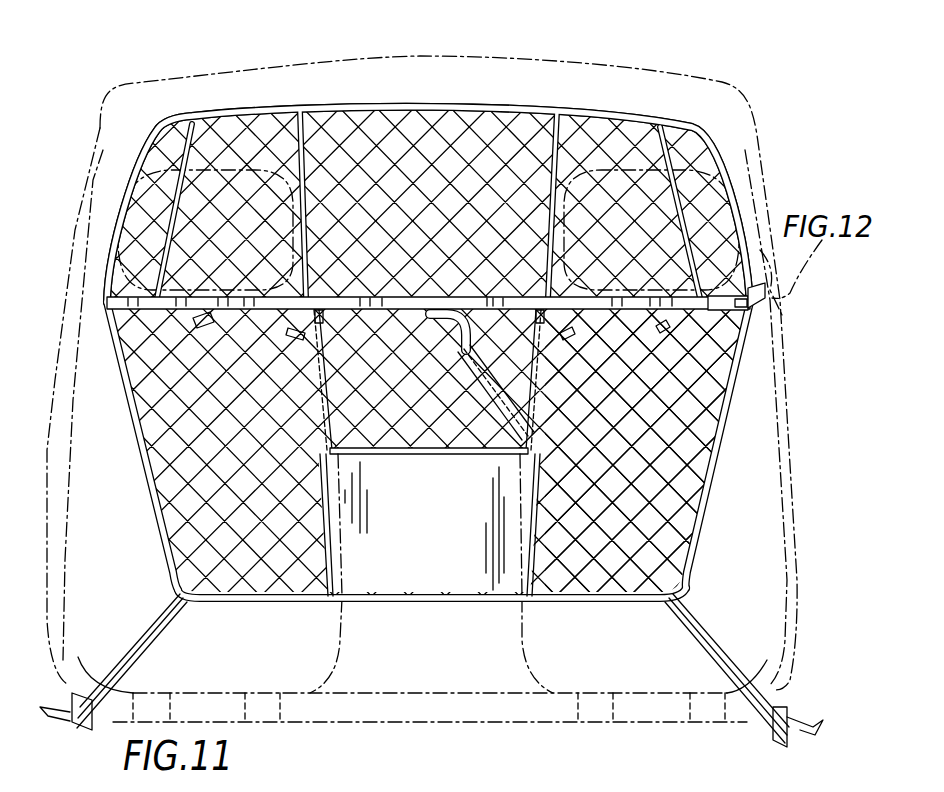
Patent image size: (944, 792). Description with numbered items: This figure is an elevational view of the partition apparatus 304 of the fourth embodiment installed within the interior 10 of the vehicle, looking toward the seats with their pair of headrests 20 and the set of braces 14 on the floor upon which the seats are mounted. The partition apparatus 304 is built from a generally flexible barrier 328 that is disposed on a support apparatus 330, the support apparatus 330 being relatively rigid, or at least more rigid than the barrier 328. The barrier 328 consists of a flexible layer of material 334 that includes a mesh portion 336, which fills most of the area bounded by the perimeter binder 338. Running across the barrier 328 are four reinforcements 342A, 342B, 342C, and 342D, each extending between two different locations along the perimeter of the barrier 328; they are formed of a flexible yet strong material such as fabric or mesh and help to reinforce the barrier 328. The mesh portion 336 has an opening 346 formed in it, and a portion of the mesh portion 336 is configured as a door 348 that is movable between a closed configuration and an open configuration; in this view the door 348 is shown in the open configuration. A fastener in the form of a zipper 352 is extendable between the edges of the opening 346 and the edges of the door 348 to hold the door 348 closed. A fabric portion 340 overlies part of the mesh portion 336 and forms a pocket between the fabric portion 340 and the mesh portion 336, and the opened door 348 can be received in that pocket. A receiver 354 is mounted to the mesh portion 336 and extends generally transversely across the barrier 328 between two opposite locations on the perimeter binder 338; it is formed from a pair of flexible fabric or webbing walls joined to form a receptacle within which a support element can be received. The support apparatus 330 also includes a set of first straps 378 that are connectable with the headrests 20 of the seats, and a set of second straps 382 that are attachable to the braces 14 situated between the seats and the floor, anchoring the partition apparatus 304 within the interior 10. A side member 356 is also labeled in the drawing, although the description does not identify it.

The interior 10 is at (392, 722).
The braces 14 is at (283, 708).
The headrests 20 is at (128, 222).
The partition apparatus 304 is at (545, 92).
The barrier 328 is at (402, 99).
The support apparatus 330 is at (500, 100).
The layer of material 334 is at (690, 483).
The mesh portion 336 is at (690, 512).
The perimeter binder 338 is at (265, 599).
The fabric portion 340 is at (427, 575).
The reinforcement 342A is at (202, 147).
The reinforcement 342B is at (313, 147).
The reinforcement 342C is at (590, 143).
The reinforcement 342D is at (690, 168).
The opening 346 is at (537, 336).
The door 348 is at (474, 372).
The zipper 352 is at (527, 405).
The receiver 354 is at (112, 303).
The left side frame member 356 is at (141, 475).
The first straps 378 is at (203, 311).
The second straps 382 is at (153, 648).